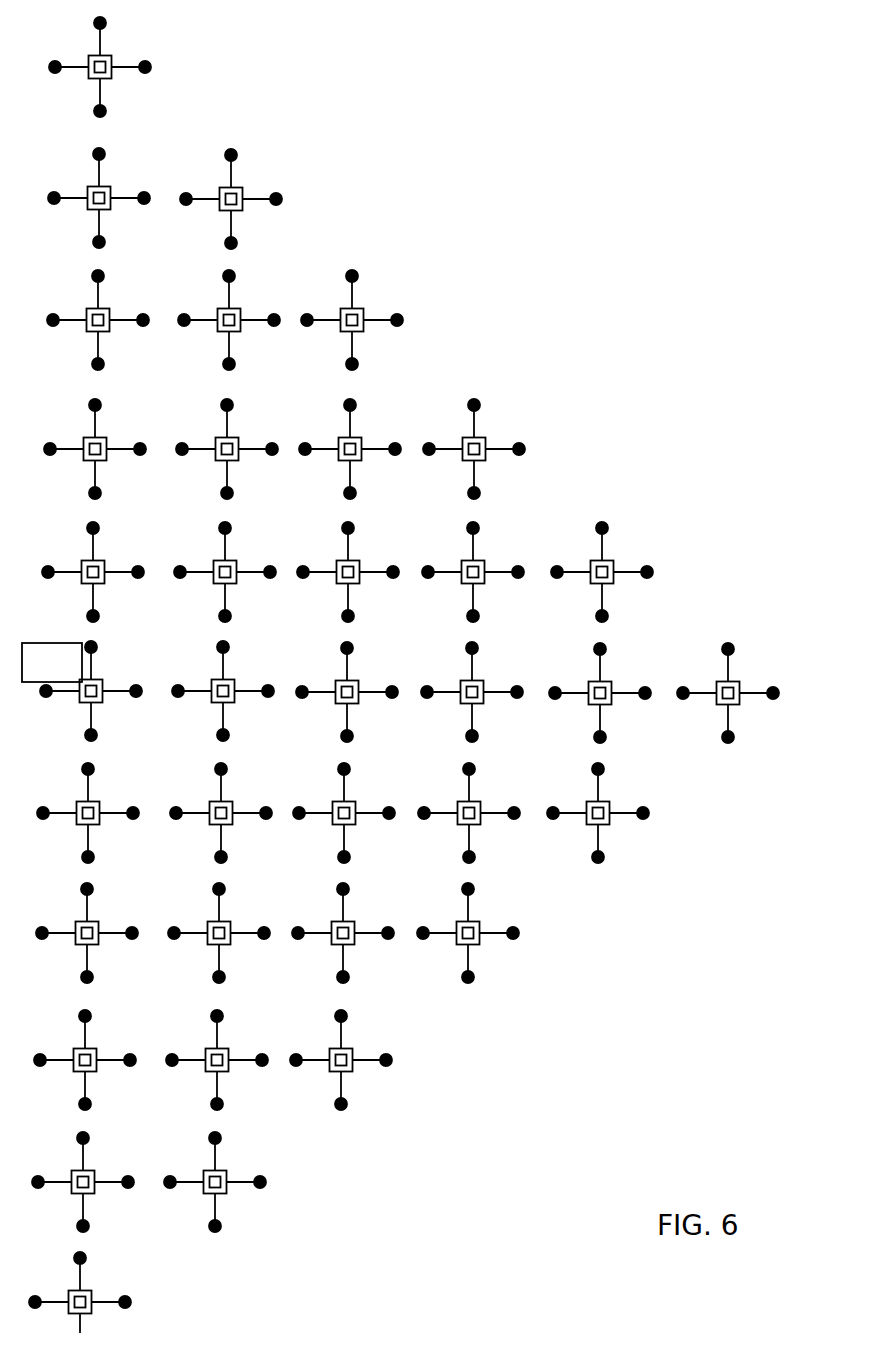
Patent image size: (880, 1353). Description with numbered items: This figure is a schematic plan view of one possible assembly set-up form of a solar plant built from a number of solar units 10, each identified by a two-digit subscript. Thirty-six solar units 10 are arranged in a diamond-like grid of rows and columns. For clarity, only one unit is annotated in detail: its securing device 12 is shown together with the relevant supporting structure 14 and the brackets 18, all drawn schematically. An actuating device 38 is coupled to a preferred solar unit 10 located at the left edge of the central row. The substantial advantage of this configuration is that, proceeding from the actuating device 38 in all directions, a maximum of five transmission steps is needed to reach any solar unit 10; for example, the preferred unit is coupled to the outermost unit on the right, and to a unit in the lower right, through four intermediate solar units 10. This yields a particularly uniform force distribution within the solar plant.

The solar unit 10 is at (407, 675).
The securing device 12 is at (237, 185).
The supporting structure 14 is at (362, 310).
The bracket 18 is at (357, 348).
The actuating device 38 is at (52, 662).